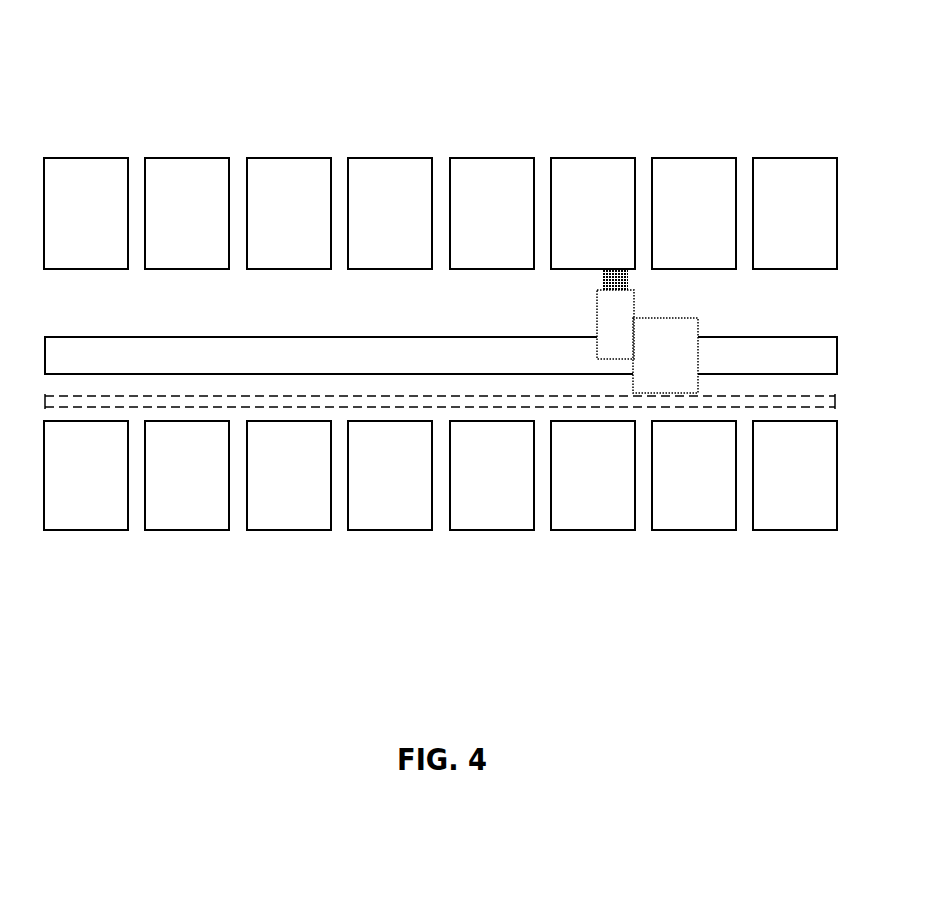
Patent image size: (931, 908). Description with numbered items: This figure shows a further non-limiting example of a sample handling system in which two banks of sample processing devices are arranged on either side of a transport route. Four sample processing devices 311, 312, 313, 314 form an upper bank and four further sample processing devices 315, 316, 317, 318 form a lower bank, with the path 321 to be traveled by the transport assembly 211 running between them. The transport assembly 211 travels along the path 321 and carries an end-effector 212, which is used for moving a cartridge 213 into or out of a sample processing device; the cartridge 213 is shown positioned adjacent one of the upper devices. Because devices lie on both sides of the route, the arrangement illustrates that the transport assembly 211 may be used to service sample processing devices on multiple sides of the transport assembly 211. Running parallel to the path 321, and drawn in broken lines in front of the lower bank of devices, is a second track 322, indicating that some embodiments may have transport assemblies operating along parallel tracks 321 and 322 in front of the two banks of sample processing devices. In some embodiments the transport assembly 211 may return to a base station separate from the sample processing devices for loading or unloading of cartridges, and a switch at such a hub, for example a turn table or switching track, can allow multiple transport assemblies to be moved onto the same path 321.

The transport assembly 211 is at (668, 340).
The end-effector 212 is at (610, 330).
The cartridge 213 is at (602, 281).
The sample processing device 311 is at (487, 182).
The sample processing device 312 is at (590, 182).
The sample processing device 313 is at (697, 182).
The sample processing device 314 is at (795, 182).
The sample processing device 315 is at (483, 513).
The sample processing device 316 is at (587, 513).
The sample processing device 317 is at (693, 513).
The sample processing device 318 is at (790, 513).
The path 321 is at (205, 356).
The track 322 is at (122, 400).